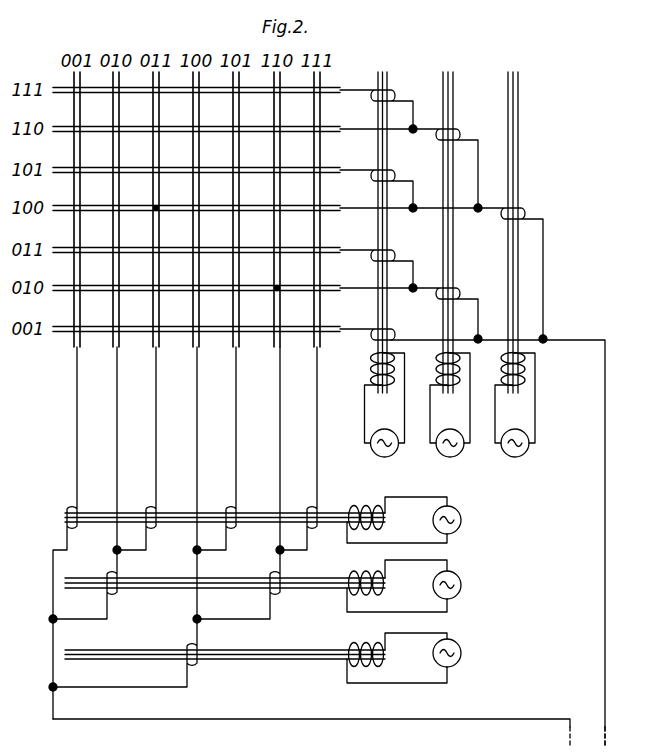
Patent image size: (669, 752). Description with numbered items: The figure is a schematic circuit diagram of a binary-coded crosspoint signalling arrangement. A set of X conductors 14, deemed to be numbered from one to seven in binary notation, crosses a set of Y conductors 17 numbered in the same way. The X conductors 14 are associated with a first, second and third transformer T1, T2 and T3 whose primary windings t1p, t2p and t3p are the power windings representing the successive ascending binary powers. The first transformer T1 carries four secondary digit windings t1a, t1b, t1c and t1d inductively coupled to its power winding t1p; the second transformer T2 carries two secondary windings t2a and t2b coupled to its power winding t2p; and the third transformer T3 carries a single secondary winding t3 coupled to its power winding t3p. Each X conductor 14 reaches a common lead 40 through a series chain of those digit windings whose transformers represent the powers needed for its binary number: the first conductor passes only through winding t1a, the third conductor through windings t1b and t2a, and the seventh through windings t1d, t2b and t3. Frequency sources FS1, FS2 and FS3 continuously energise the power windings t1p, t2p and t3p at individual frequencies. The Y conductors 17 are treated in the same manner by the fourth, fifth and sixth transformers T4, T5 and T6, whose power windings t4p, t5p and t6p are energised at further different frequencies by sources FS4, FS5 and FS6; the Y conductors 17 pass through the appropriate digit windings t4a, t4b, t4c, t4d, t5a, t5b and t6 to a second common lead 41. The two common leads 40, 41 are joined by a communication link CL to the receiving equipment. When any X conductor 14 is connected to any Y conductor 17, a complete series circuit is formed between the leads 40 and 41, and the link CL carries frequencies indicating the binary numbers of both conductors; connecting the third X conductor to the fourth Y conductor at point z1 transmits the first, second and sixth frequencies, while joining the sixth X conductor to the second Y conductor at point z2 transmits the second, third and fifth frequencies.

The X conductors 14 is at (320, 140).
The Y conductors 17 is at (214, 168).
The connection point z1 is at (158, 211).
The connection point z2 is at (280, 286).
The first transformer T1 is at (225, 503).
The second transformer T2 is at (225, 571).
The third transformer T3 is at (225, 641).
The fourth transformer T4 is at (382, 219).
The fifth transformer T5 is at (447, 219).
The sixth transformer T6 is at (512, 219).
The secondary winding t1a is at (58, 533).
The secondary winding t1b is at (136, 448).
The secondary winding t1c is at (216, 448).
The secondary winding t1d is at (298, 448).
The secondary winding t2a is at (85, 483).
The secondary winding t2b is at (238, 483).
The secondary winding t3 is at (125, 517).
The digit winding t4a is at (384, 329).
The digit winding t4b is at (384, 263).
The digit winding t4c is at (384, 182).
The digit winding t4d is at (385, 102).
The digit winding t5a is at (416, 307).
The digit winding t5b is at (416, 161).
The digit winding t6 is at (443, 267).
The primary winding t1p is at (397, 520).
The primary winding t2p is at (397, 586).
The primary winding t3p is at (397, 658).
The power winding t4p is at (385, 398).
The power winding t5p is at (450, 398).
The power winding t6p is at (515, 398).
The frequency source FS1 is at (465, 520).
The frequency source FS2 is at (465, 585).
The frequency source FS3 is at (465, 653).
The frequency source FS4 is at (380, 455).
The frequency source FS5 is at (445, 455).
The frequency source FS6 is at (510, 455).
The common lead 40 is at (262, 719).
The common lead 41 is at (605, 547).
The communication link CL is at (587, 739).